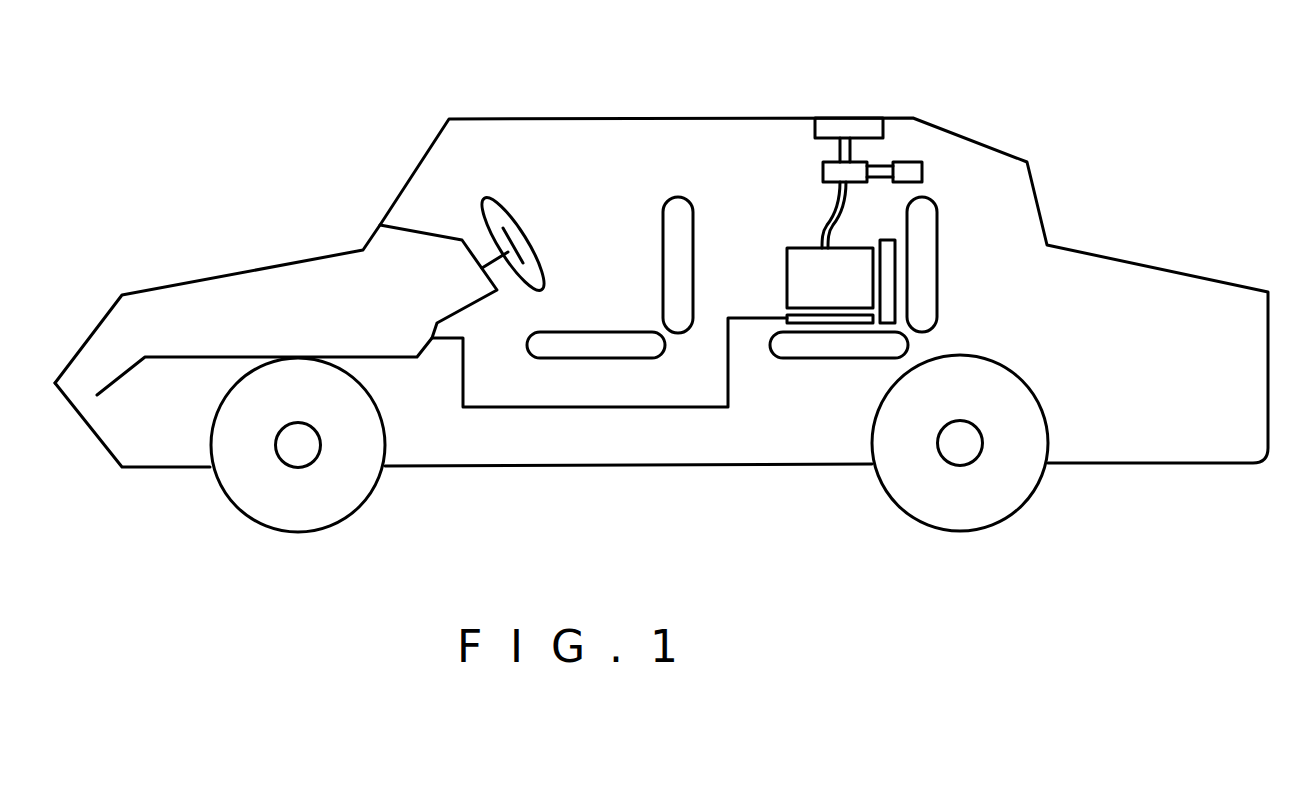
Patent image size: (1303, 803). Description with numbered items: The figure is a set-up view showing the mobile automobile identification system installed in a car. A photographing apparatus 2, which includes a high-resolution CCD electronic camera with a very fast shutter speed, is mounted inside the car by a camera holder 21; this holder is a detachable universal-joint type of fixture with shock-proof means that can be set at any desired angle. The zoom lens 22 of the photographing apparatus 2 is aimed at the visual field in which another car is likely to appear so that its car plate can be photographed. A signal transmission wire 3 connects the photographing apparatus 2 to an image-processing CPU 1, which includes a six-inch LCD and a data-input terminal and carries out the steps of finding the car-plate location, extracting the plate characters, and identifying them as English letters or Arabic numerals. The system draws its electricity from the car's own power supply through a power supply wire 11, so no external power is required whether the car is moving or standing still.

The image-processing CPU 1 is at (850, 321).
The photographing apparatus 2 is at (823, 165).
The signal transmission wire 3 is at (833, 210).
The power supply wire 11 is at (587, 407).
The camera holder 21 is at (863, 130).
The lens 22 is at (922, 167).